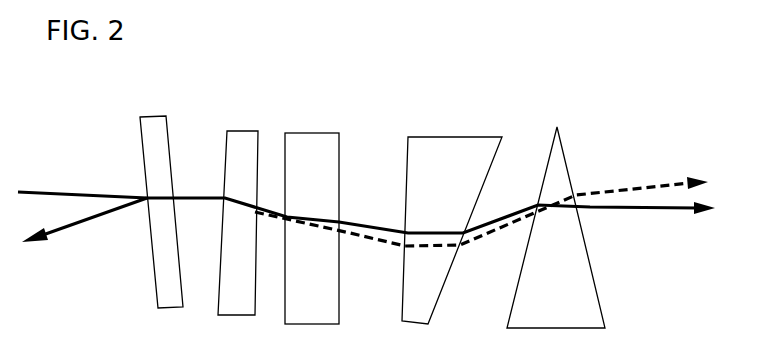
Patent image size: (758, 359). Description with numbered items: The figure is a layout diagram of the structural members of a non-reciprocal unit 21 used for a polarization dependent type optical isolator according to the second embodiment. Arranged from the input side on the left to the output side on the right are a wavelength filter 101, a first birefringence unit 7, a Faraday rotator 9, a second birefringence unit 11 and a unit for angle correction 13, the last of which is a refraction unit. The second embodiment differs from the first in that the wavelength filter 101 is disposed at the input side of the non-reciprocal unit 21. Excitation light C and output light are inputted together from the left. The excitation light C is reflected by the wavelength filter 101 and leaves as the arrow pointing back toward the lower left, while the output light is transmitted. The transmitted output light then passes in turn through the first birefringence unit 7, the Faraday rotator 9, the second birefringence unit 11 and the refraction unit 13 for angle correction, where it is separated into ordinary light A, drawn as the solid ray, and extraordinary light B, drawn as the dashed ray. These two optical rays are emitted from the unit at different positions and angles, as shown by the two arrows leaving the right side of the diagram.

The non-reciprocal unit 21 is at (637, 88).
The wavelength filter 101 is at (152, 117).
The first birefringence unit 7 is at (245, 130).
The Faraday rotator 9 is at (320, 132).
The second birefringence unit 11 is at (442, 137).
The unit for angle correction 13 is at (563, 153).
The ordinary light A is at (647, 213).
The extraordinary light B is at (657, 183).
The excitation light C is at (87, 220).